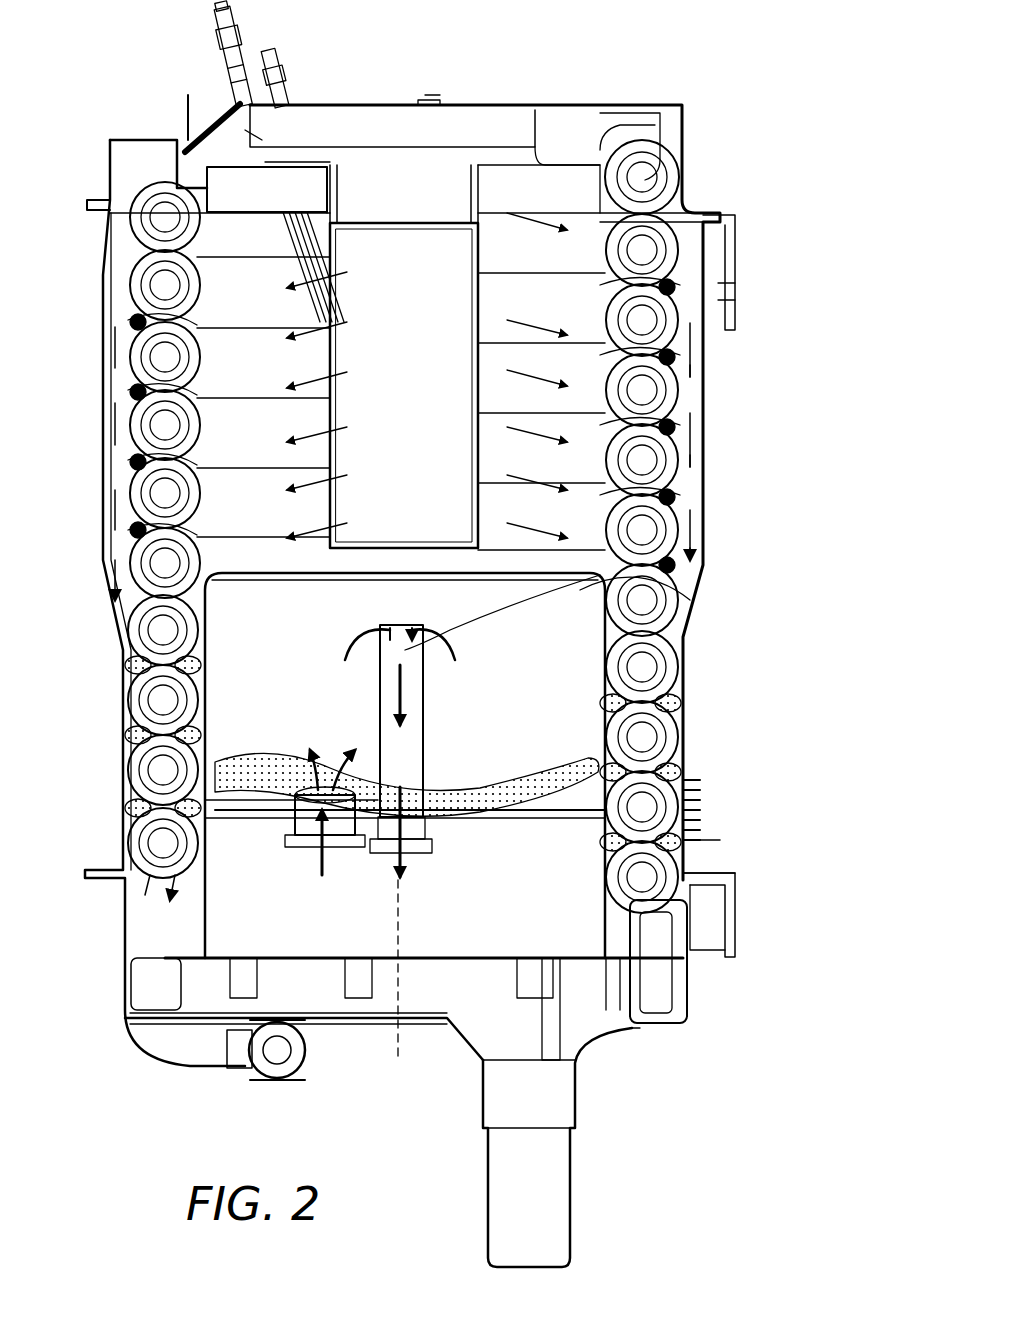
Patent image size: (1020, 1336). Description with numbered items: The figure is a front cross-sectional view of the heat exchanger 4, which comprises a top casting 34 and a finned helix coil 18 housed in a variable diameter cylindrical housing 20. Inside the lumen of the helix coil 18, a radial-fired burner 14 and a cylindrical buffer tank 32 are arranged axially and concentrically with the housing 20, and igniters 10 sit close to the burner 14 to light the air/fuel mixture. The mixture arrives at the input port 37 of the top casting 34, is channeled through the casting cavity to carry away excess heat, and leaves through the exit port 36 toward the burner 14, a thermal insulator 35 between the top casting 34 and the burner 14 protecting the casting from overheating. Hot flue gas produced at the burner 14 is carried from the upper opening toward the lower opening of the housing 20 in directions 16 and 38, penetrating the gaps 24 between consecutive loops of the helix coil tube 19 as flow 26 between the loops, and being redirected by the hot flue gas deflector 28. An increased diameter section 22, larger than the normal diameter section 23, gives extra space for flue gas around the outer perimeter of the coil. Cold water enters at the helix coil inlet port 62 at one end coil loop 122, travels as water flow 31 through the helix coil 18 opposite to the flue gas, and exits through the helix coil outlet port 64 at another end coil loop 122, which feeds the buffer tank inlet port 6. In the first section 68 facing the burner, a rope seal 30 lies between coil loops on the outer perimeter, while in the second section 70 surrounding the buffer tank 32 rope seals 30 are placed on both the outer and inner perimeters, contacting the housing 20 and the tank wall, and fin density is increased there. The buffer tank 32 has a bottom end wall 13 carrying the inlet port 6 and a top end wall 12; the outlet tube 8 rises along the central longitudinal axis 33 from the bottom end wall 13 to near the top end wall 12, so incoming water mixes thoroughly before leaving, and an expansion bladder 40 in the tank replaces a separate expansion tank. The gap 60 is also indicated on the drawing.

The heat exchanger 4 is at (802, 180).
The buffer tank inlet port 6 is at (295, 844).
The buffer tank outlet tube 8 is at (432, 842).
The igniter 10 is at (290, 240).
The top end wall 12 is at (622, 545).
The bottom end wall 13 is at (515, 800).
The radial-fired burner 14 is at (425, 280).
The direction of hot flue gas 16 is at (525, 215).
The finned helix coil 18 is at (668, 240).
The helix coil tube 19 is at (705, 224).
The heat exchanger housing 20 is at (738, 450).
The section of heat exchanger housing with increased diameter 22 is at (705, 401).
The section of heat exchanger housing with normal diameter 23 is at (687, 682).
The gap between helix coil loops 24 is at (715, 270).
The hot flue gas flow between coil loops 26 is at (710, 298).
The hot flue gas deflector 28 is at (663, 623).
The rope seal 30 is at (688, 352).
The water flow 31 is at (580, 596).
The buffer tank 32 is at (518, 687).
The central longitudinal axis of buffer tank 33 is at (398, 1048).
The top casting 34 is at (660, 105).
The thermal insulator 35 is at (245, 185).
The exit port of top casting 36 is at (405, 215).
The input port of top casting 37 is at (428, 100).
The direction of hot flue gas flow between coil loops as enhanced by rope seal 38 is at (665, 729).
The expansion bladder 40 is at (372, 790).
The gap 60 is at (662, 444).
The helix coil inlet port 62 is at (690, 865).
The helix coil outlet port 64 is at (645, 175).
The first section 68 is at (66, 192).
The second section 70 is at (78, 577).
The end coil loop 122 is at (660, 222).